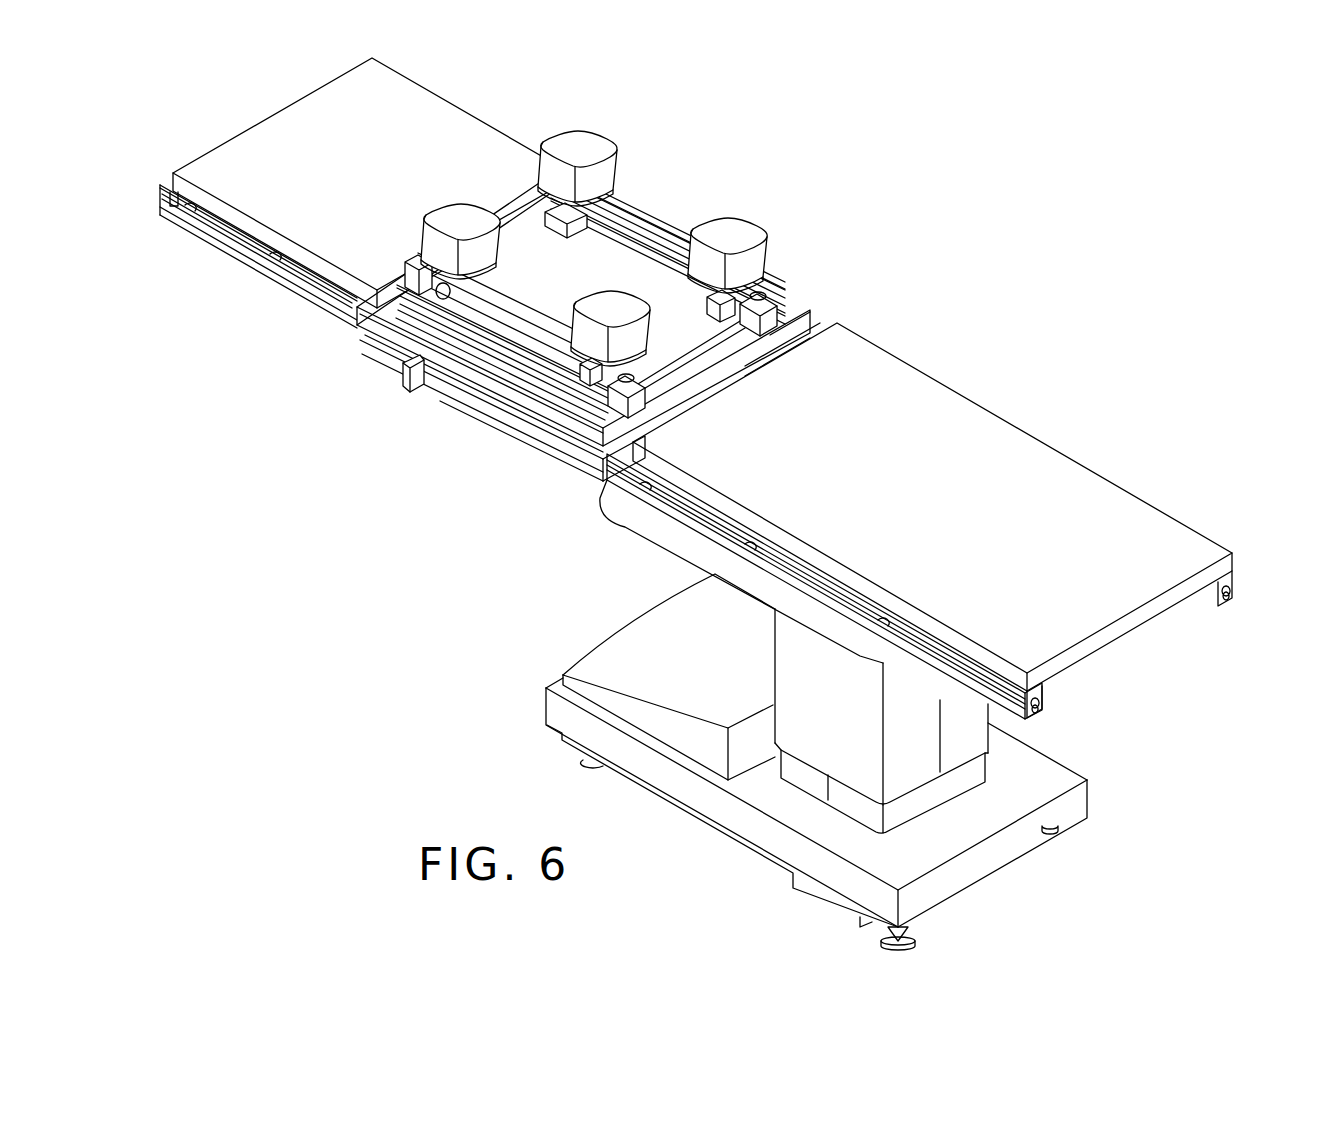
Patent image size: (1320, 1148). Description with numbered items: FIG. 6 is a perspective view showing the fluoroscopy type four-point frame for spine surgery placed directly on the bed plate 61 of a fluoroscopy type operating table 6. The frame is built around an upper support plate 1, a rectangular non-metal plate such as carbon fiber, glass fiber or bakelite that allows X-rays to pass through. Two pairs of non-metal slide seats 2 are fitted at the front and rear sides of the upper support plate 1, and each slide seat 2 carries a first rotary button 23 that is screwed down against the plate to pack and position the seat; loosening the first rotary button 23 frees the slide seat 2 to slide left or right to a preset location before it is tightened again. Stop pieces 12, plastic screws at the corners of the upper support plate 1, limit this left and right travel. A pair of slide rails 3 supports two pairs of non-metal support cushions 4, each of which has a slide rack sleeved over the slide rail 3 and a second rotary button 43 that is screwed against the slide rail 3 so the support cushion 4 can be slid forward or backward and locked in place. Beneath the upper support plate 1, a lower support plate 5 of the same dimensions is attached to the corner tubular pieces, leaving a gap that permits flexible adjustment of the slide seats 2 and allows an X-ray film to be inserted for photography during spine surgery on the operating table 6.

The upper support plate 1 is at (775, 356).
The slide seat 2 is at (776, 307).
The slide rail 3 is at (618, 215).
The support cushion 4 is at (600, 136).
The lower support plate 5 is at (748, 366).
The fluoroscopy type operating table 6 is at (906, 360).
The stop piece 12 is at (612, 396).
The first rotary button 23 is at (752, 296).
The second rotary button 43 is at (397, 366).
The bed plate 61 is at (665, 231).